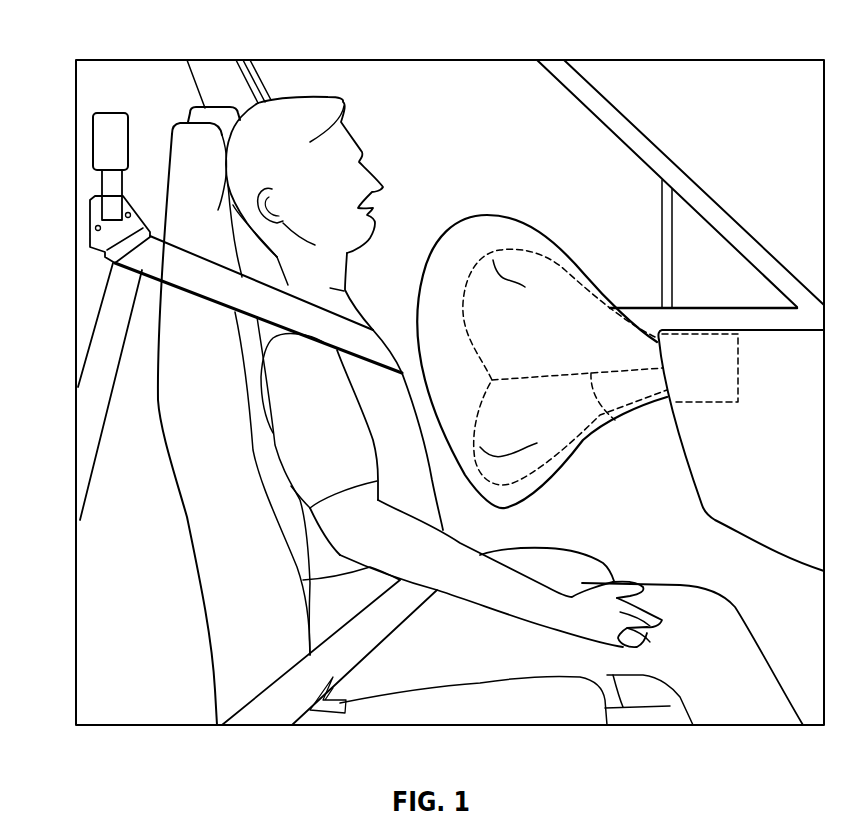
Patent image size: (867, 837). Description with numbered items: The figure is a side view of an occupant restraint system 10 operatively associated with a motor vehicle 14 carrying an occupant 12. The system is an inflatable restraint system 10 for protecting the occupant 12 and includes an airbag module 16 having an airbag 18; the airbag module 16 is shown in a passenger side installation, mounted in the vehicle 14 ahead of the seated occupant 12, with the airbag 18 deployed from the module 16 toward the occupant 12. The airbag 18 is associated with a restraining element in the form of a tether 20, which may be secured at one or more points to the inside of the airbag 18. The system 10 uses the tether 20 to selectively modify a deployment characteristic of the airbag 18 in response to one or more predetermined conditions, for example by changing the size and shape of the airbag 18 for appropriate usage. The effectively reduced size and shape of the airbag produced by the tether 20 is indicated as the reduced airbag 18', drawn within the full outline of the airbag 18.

The occupant restraint system 10 is at (545, 115).
The occupant 12 is at (293, 125).
The motor vehicle 14 is at (93, 88).
The airbag module 16 is at (738, 373).
The airbag 18 is at (542, 345).
The reduced airbag 18' is at (565, 354).
The tether 20 is at (615, 420).